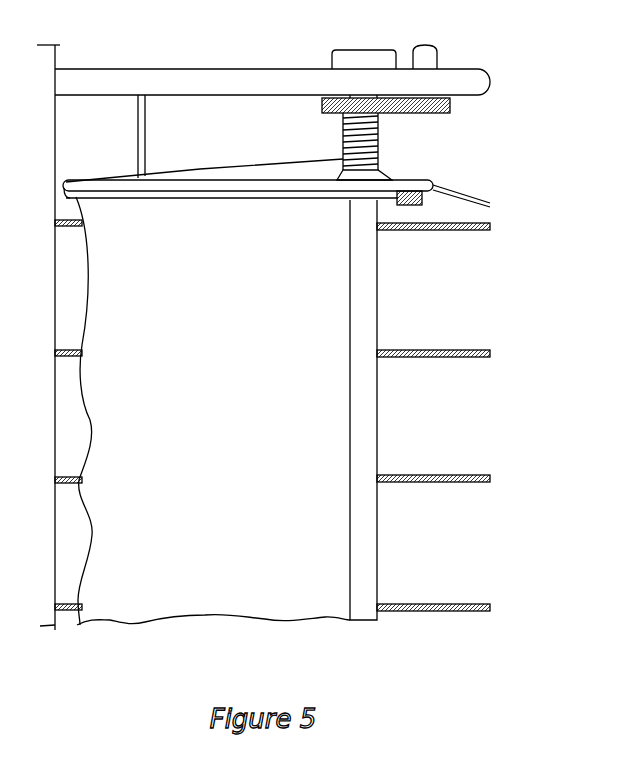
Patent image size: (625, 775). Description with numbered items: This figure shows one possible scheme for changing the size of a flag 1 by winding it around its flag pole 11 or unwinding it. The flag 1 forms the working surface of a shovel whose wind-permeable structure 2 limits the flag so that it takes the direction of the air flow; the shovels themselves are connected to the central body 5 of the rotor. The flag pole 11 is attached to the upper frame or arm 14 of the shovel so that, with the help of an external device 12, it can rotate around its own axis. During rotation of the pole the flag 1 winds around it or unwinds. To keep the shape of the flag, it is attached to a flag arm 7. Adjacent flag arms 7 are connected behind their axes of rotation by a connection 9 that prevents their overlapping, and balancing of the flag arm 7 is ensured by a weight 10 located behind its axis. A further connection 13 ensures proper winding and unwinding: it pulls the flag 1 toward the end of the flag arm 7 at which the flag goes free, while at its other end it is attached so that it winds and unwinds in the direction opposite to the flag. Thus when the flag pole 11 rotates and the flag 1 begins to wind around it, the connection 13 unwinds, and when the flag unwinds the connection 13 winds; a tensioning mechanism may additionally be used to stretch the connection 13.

The flag 1 is at (207, 553).
The wind-permeable structure 2 is at (136, 138).
The central body 5 is at (56, 50).
The flag arm 7 is at (277, 183).
The connection 9 is at (475, 198).
The weight 10 is at (405, 193).
The flag pole 11 is at (377, 158).
The external device 12 is at (443, 97).
The connection 13 is at (203, 164).
The upper frame or arm 14 is at (168, 80).